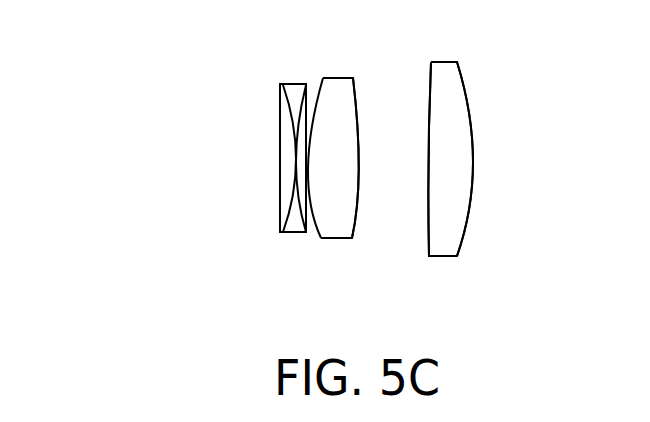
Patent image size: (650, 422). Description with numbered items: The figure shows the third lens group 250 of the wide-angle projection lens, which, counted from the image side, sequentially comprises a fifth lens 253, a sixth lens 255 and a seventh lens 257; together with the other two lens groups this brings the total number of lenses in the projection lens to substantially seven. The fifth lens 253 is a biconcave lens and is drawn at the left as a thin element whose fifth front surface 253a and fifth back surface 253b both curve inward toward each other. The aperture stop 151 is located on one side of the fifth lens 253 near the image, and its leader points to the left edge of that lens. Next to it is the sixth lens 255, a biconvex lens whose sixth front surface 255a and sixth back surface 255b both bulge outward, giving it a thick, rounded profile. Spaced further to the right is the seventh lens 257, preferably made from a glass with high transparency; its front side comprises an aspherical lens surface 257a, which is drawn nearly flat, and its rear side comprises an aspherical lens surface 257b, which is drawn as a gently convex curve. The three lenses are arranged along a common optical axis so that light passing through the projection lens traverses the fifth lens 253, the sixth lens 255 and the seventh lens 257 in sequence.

The third lens group 250 is at (67, 30).
The fifth lens 253 is at (293, 84).
The fifth front surface 253a is at (285, 105).
The fifth back surface 253b is at (310, 90).
The sixth lens 255 is at (354, 79).
The sixth front surface 255a is at (318, 238).
The sixth back surface 255b is at (358, 238).
The seventh lens 257 is at (458, 65).
The aspherical lens surface 257a is at (427, 244).
The aspherical lens surface 257b is at (468, 231).
The aperture stop 151 is at (280, 203).